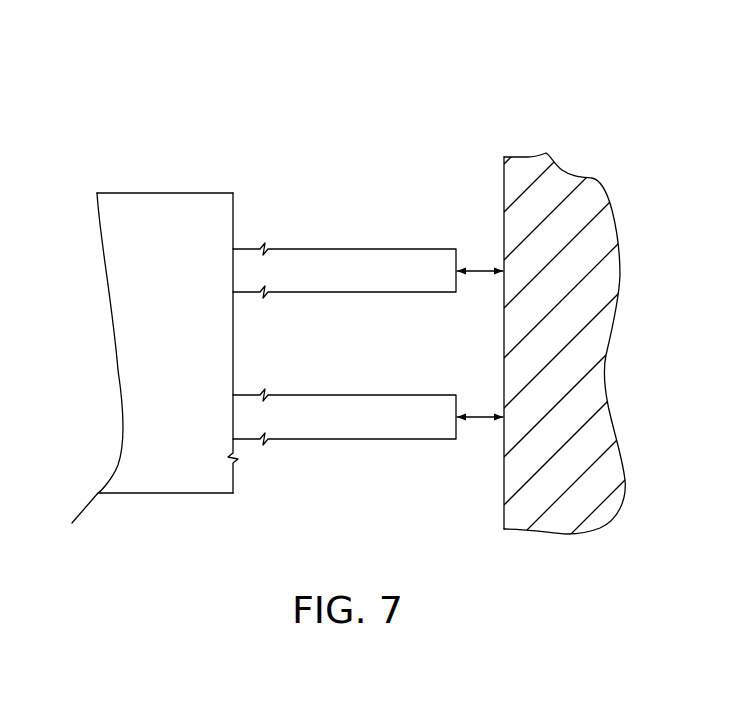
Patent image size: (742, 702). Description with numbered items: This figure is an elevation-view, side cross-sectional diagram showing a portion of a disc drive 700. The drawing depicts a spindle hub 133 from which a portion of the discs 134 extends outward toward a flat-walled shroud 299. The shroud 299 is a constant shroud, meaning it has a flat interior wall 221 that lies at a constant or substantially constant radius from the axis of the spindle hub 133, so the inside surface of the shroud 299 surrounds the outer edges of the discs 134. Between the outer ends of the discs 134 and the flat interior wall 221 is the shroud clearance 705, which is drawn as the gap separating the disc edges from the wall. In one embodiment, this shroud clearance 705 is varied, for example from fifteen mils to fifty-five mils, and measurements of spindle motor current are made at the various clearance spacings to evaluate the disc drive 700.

The disc drive 700 is at (604, 106).
The spindle hub 133 is at (106, 171).
The discs 134 is at (320, 292).
The shroud clearance 705 is at (477, 268).
The flat-walled shroud 299 is at (547, 155).
The flat interior wall 221 is at (504, 197).